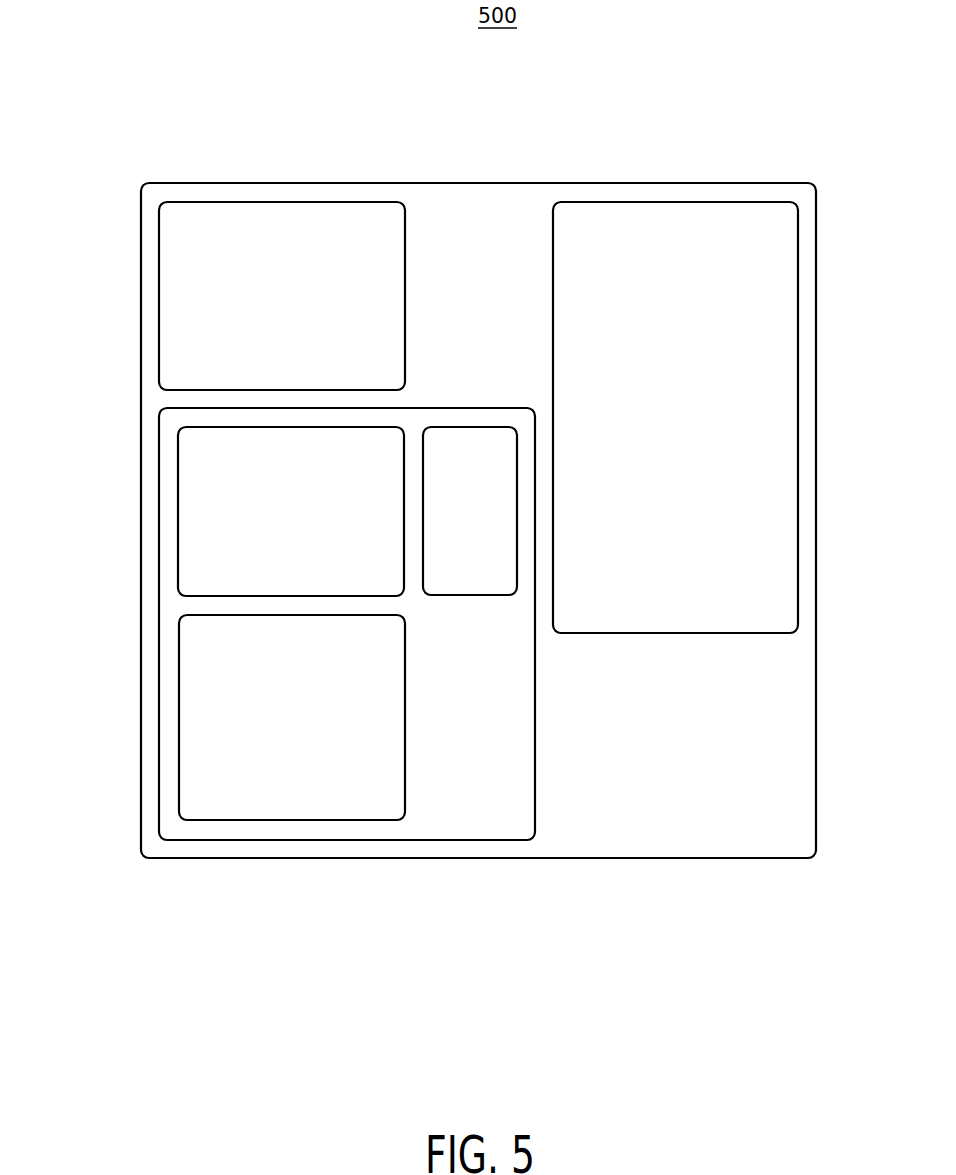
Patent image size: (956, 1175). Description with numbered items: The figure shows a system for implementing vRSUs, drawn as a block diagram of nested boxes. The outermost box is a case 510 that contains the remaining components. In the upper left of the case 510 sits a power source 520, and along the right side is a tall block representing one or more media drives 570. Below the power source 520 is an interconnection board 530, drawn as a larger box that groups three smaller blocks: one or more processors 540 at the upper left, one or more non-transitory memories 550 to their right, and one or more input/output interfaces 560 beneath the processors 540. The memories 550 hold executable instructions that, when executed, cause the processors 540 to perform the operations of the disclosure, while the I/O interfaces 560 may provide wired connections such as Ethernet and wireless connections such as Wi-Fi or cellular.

The case 510 is at (253, 183).
The power source 520 is at (366, 202).
The interconnection board 530 is at (538, 728).
The processors 540 is at (178, 520).
The non-transitory memories 550 is at (469, 598).
The input/output (I/O) interfaces 560 is at (292, 823).
The media drives 570 is at (685, 202).